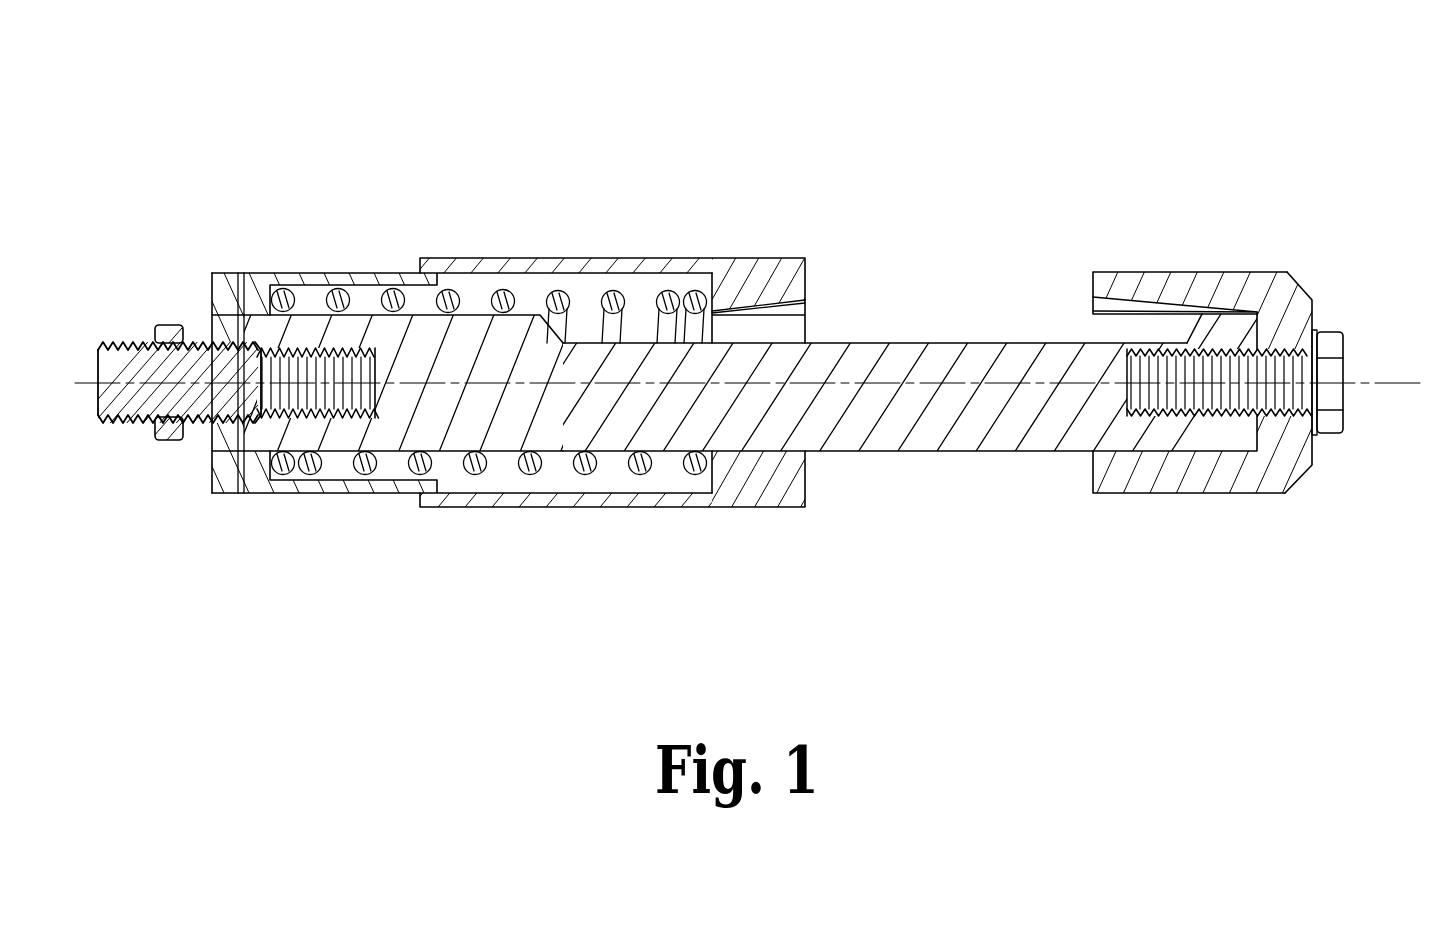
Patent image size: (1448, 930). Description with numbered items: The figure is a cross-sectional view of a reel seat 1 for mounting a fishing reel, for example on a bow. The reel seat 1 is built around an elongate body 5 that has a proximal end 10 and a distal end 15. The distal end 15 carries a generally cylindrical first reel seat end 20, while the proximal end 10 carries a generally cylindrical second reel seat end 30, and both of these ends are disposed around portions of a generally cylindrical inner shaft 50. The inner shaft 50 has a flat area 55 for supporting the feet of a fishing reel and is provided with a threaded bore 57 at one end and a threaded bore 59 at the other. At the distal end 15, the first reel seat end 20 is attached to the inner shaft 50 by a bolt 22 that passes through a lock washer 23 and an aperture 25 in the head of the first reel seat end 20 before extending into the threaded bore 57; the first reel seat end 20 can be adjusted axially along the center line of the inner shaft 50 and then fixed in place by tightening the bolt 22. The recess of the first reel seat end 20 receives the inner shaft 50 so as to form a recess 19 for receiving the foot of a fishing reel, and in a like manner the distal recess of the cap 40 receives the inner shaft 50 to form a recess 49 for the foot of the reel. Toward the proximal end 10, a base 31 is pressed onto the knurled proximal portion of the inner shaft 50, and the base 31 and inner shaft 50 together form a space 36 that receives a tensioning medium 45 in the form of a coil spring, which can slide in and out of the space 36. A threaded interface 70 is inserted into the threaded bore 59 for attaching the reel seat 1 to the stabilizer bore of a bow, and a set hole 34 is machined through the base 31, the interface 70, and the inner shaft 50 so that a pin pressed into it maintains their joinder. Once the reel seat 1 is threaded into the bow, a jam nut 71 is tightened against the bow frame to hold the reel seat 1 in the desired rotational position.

The reel seat 1 is at (622, 112).
The elongate body 5 is at (1313, 258).
The proximal end 10 is at (194, 272).
The distal end 15 is at (1327, 465).
The recess 19 is at (1113, 327).
The first reel seat end 20 is at (1201, 499).
The bolt 22 is at (1343, 355).
The lock washer 23 is at (1318, 332).
The aperture 25 is at (1292, 420).
The second reel seat end 30 is at (440, 553).
The base 31 is at (276, 495).
The set hole 34 is at (238, 275).
The space 36 is at (366, 297).
The cap 40 is at (692, 508).
The tensioning medium 45 is at (544, 472).
The recess 49 is at (790, 327).
The inner shaft 50 is at (926, 457).
The flat area 55 is at (948, 343).
The threaded bore 57 is at (1133, 386).
The threaded bore 59 is at (277, 407).
The interface 70 is at (98, 363).
The jam nut 71 is at (176, 326).